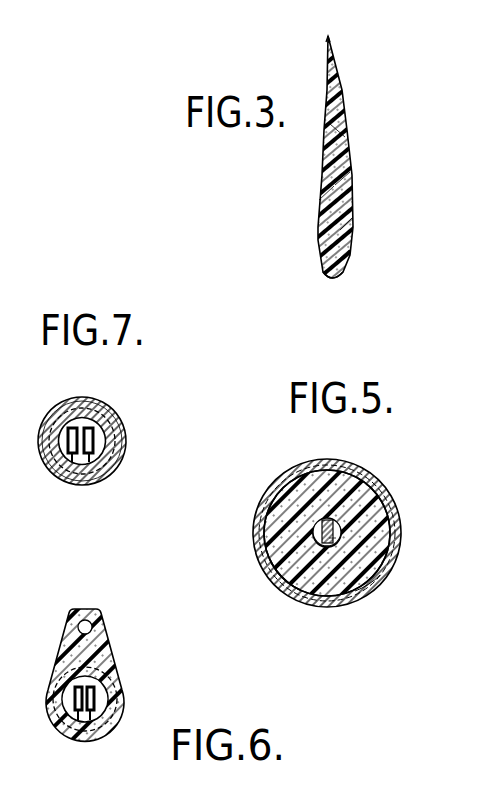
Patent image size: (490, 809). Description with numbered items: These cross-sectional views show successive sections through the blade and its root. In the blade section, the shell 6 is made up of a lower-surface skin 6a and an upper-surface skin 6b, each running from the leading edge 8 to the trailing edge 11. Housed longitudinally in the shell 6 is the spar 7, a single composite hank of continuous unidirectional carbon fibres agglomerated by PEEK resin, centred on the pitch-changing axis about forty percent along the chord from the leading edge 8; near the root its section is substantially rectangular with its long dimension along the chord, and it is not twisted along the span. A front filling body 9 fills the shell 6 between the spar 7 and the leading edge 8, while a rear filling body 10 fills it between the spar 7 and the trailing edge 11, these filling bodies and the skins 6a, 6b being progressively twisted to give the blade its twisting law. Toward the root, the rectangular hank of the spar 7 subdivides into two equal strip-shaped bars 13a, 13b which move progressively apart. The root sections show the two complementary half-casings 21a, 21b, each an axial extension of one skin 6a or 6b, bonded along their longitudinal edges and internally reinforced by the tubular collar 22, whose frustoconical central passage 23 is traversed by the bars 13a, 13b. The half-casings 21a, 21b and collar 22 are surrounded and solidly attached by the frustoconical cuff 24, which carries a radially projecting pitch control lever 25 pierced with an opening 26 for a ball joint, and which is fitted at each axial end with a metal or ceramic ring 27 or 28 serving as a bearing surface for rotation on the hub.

In FIG. 3, the shell 6 is at (342, 90).
In FIG. 3, the lower-surface skin 6a is at (318, 202).
In FIG. 3, the upper-surface skin 6b is at (354, 219).
In FIG. 3, the spar 7 is at (350, 177).
In FIG. 5, the spar 7 is at (333, 532).
In FIG. 3, the leading edge 8 is at (334, 278).
In FIG. 3, the front filling body 9 is at (349, 251).
In FIG. 3, the rear filling body 10 is at (347, 132).
In FIG. 3, the trailing edge 11 is at (327, 37).
In FIG. 7, the first bar 13a is at (70, 455).
In FIG. 6, the first bar 13a is at (67, 735).
In FIG. 7, the second bar 13b is at (92, 455).
In FIG. 6, the second bar 13b is at (103, 735).
In FIG. 5, the first half-casing 21a is at (288, 588).
In FIG. 5, the second half-casing 21b is at (363, 488).
In FIG. 7, the tubular collar 22 is at (103, 410).
In FIG. 5, the tubular collar 22 is at (387, 508).
In FIG. 7, the central passage 23 is at (97, 440).
In FIG. 5, the central passage 23 is at (332, 538).
In FIG. 6, the central passage 23 is at (95, 697).
In FIG. 7, the cuff 24 is at (53, 415).
In FIG. 5, the cuff 24 is at (363, 583).
In FIG. 6, the pitch control lever 25 is at (75, 612).
In FIG. 6, the opening 26 is at (92, 627).
In FIG. 5, the ring 27 is at (290, 477).
In FIG. 7, the ring 28 is at (115, 462).